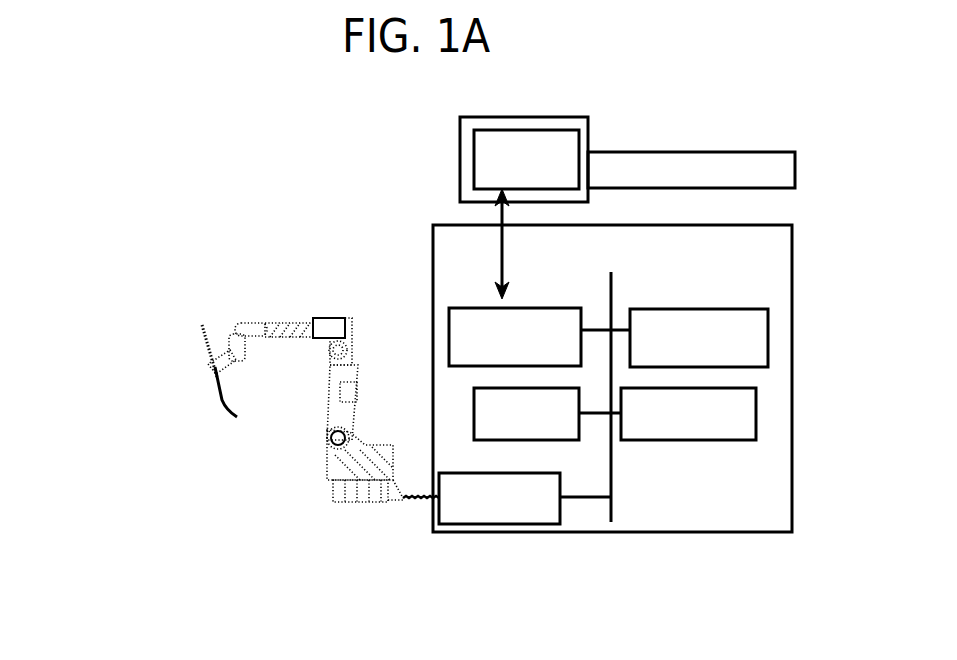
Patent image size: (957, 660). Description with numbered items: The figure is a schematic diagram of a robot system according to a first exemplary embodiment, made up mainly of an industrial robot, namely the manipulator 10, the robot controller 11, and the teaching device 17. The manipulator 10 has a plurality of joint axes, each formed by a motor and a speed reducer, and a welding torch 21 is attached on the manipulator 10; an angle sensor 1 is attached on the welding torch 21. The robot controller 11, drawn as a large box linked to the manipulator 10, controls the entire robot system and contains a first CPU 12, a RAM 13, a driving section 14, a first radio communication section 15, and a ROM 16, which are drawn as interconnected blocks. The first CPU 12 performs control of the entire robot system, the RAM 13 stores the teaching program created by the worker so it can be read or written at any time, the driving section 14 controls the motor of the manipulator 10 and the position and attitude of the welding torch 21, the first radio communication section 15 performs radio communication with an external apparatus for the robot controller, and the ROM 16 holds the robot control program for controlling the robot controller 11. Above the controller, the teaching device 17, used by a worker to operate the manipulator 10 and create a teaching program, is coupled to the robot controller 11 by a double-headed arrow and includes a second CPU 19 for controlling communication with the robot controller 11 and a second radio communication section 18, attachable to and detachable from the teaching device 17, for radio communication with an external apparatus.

The angle sensor 1 is at (227, 413).
The manipulator 10 is at (318, 437).
The robot controller 11 is at (433, 241).
The first CPU 12 is at (449, 330).
The RAM 13 is at (563, 440).
The driving section 14 is at (502, 523).
The first radio communication section 15 is at (768, 337).
The ROM 16 is at (752, 413).
The teaching device 17 is at (460, 160).
The second radio communication section 18 is at (718, 152).
The second CPU 19 is at (562, 130).
The welding torch 21 is at (203, 342).